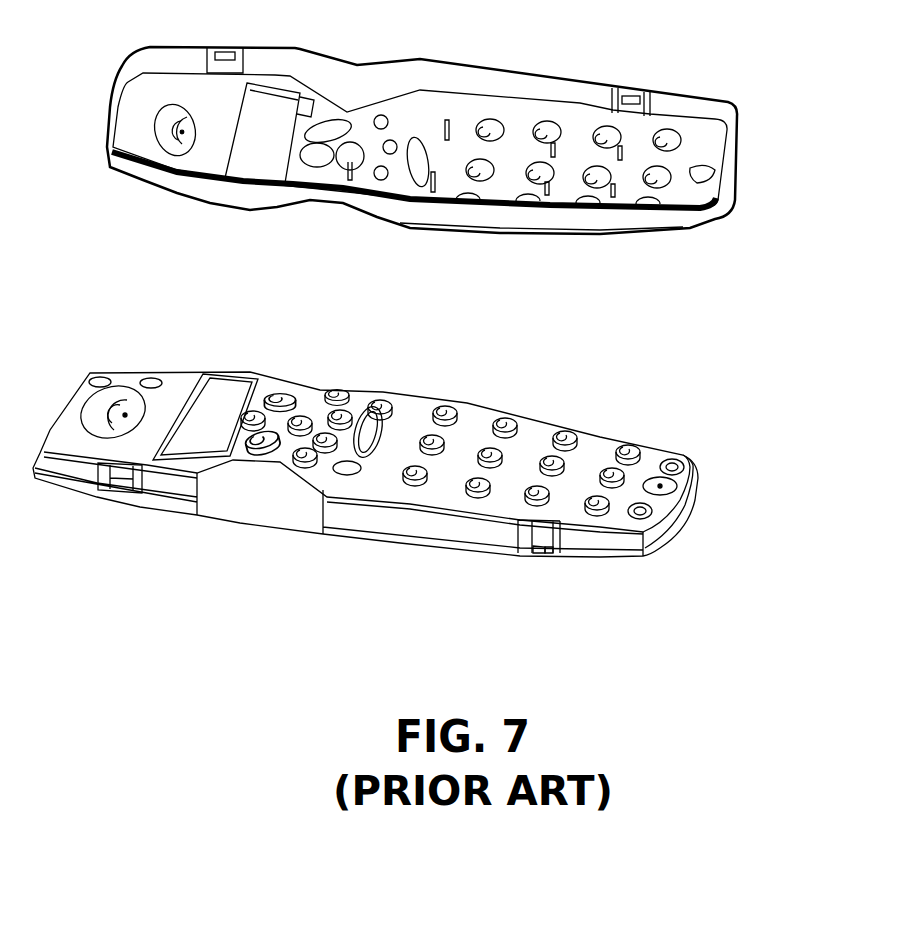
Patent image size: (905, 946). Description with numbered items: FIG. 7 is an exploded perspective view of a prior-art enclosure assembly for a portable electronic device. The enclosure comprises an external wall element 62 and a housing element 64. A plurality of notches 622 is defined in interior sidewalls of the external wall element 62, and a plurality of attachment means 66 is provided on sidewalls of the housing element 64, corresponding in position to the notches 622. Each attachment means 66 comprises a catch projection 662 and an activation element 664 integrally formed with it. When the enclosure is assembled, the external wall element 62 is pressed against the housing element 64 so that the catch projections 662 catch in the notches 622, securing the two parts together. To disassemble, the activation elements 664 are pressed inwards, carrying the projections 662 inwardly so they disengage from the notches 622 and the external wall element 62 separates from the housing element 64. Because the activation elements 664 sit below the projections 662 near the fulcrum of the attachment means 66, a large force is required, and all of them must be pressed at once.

The external wall element 62 is at (708, 197).
The notches 622 is at (632, 93).
The housing element 64 is at (670, 513).
The attachment means 66 is at (552, 581).
The catch projection 662 is at (576, 577).
The activation element 664 is at (530, 550).